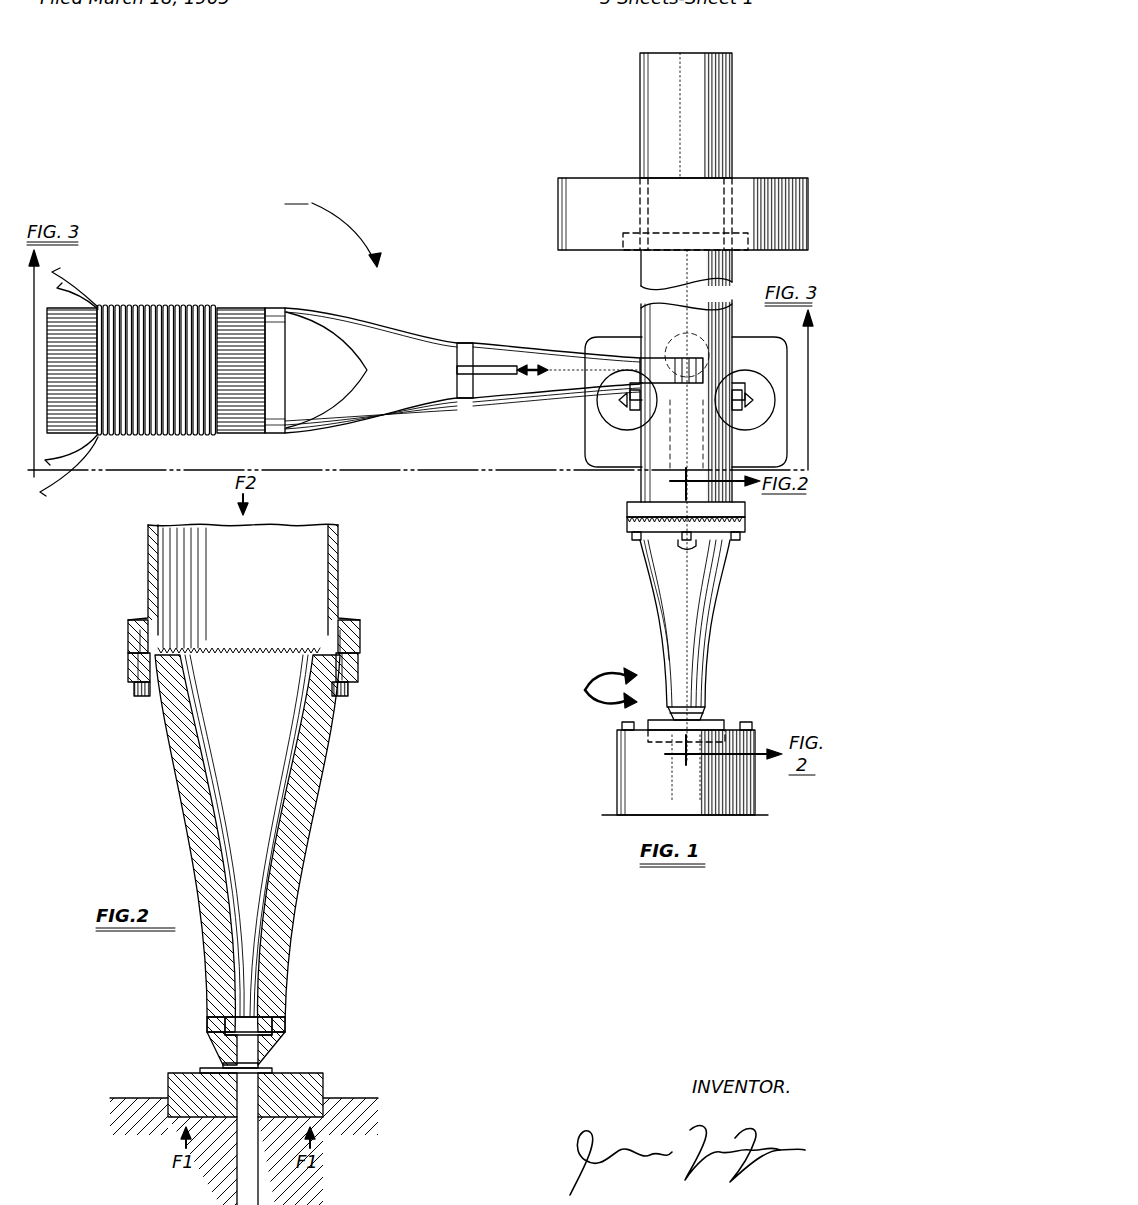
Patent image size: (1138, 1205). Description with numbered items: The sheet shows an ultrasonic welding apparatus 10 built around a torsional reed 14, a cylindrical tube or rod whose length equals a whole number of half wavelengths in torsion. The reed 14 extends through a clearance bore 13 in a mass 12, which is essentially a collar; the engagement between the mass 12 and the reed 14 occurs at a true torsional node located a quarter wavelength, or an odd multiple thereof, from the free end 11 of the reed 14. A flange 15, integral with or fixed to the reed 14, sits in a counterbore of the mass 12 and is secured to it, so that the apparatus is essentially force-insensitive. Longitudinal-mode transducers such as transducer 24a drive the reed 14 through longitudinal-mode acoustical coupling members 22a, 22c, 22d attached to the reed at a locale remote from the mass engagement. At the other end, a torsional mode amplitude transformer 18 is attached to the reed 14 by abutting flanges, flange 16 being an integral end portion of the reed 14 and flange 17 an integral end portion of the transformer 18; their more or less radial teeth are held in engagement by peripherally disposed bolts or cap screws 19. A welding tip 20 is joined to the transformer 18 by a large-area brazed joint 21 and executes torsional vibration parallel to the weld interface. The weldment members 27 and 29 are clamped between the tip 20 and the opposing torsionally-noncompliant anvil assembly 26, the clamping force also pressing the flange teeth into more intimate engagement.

In FIG. 3, the ultrasonic welding apparatus 10 is at (333, 225).
In FIG. 1, the free end of reed 11 is at (660, 53).
In FIG. 1, the mass 12 is at (570, 178).
In FIG. 1, the clearance bore 13 is at (640, 188).
In FIG. 1, the torsional reed 14 is at (638, 282).
In FIG. 2, the torsional reed 14 is at (340, 565).
In FIG. 1, the flange 15 is at (646, 240).
In FIG. 1, the flange 16 is at (627, 509).
In FIG. 2, the flange 16 is at (360, 630).
In FIG. 1, the flange 17 is at (627, 528).
In FIG. 2, the flange 17 is at (358, 668).
In FIG. 1, the torsional mode amplitude transformer 18 is at (642, 592).
In FIG. 2, the torsional mode amplitude transformer 18 is at (305, 874).
In FIG. 2, the bolts or cap screws 19 is at (134, 690).
In FIG. 1, the welding tip 20 is at (705, 712).
In FIG. 2, the welding tip 20 is at (286, 1046).
In FIG. 2, the brazed joint 21 is at (265, 1022).
In FIG. 3, the longitudinal-mode acoustical coupling member 22a is at (570, 440).
In FIG. 1, the longitudinal-mode acoustical coupling member 22c is at (605, 347).
In FIG. 1, the longitudinal-mode acoustical coupling member 22d is at (732, 347).
In FIG. 3, the longitudinal-mode transducer 24a is at (241, 306).
In FIG. 1, the anvil assembly 26 is at (612, 748).
In FIG. 2, the anvil assembly 26 is at (324, 1098).
In FIG. 2, the weldment member 27 is at (228, 1064).
In FIG. 2, the weldment member 29 is at (200, 1070).